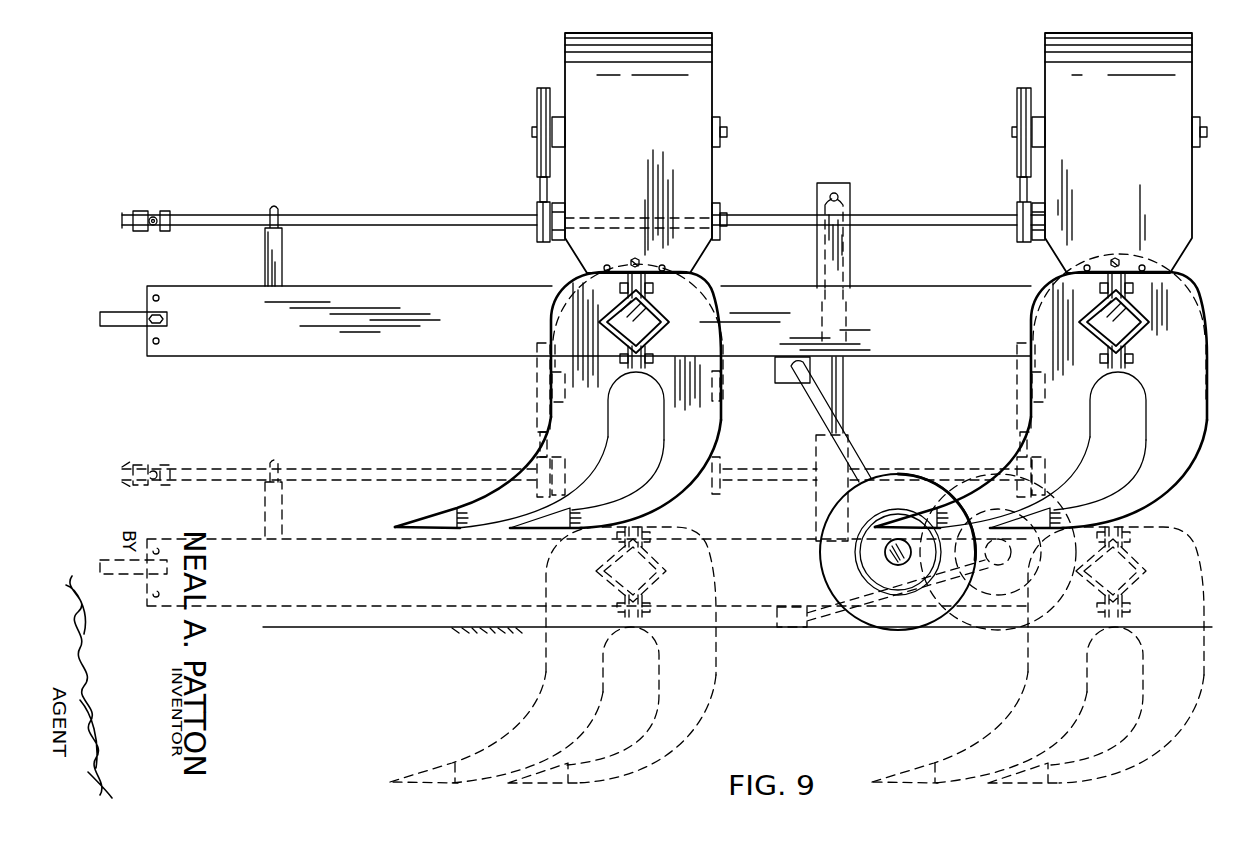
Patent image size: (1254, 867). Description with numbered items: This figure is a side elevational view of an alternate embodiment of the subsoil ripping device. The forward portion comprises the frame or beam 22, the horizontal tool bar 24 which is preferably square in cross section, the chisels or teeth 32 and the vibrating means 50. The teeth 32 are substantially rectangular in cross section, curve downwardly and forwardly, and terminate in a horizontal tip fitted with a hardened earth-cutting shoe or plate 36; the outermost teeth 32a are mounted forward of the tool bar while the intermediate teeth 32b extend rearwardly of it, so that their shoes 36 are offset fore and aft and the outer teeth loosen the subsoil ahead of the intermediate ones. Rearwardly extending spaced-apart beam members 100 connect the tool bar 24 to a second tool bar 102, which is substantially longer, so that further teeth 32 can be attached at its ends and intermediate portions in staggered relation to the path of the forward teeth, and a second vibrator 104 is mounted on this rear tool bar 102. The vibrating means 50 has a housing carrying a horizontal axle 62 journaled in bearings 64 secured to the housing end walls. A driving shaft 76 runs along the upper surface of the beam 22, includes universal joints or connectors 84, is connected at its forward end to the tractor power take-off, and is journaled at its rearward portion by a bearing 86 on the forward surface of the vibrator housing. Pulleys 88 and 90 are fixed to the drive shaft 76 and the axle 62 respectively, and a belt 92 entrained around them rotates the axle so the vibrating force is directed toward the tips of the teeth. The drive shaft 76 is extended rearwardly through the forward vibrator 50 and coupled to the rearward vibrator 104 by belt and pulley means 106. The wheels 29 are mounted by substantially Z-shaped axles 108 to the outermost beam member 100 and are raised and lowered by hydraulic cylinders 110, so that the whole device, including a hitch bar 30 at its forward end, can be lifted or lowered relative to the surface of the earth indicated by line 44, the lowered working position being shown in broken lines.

The frame or beam 22 is at (440, 288).
The tool bar 24 is at (658, 331).
The wheels 29 is at (961, 477).
The hitch bar 30 is at (115, 313).
The chisels or teeth 32 is at (658, 421).
The outermost teeth 32a is at (596, 451).
The intermediate teeth 32b is at (720, 428).
The shoe or plate 36 is at (420, 500).
The surface of the earth 44 is at (404, 626).
The vibrating means 50 is at (560, 58).
The horizontal axle 62 is at (728, 133).
The bearings 64 is at (718, 117).
The driving shaft 76 is at (442, 216).
The universal joints or connectors 84 is at (159, 210).
The bearing 86 is at (558, 206).
The pulley 88 is at (537, 214).
The pulley 90 is at (537, 118).
The belt 92 is at (540, 188).
The beam members 100 is at (921, 335).
The second tool bar 102 is at (1133, 340).
The second vibrator 104 is at (1041, 67).
The belt and pulley means 106 is at (1016, 175).
The Z-shaped axles 108 is at (806, 402).
The hydraulic cylinders 110 is at (820, 275).